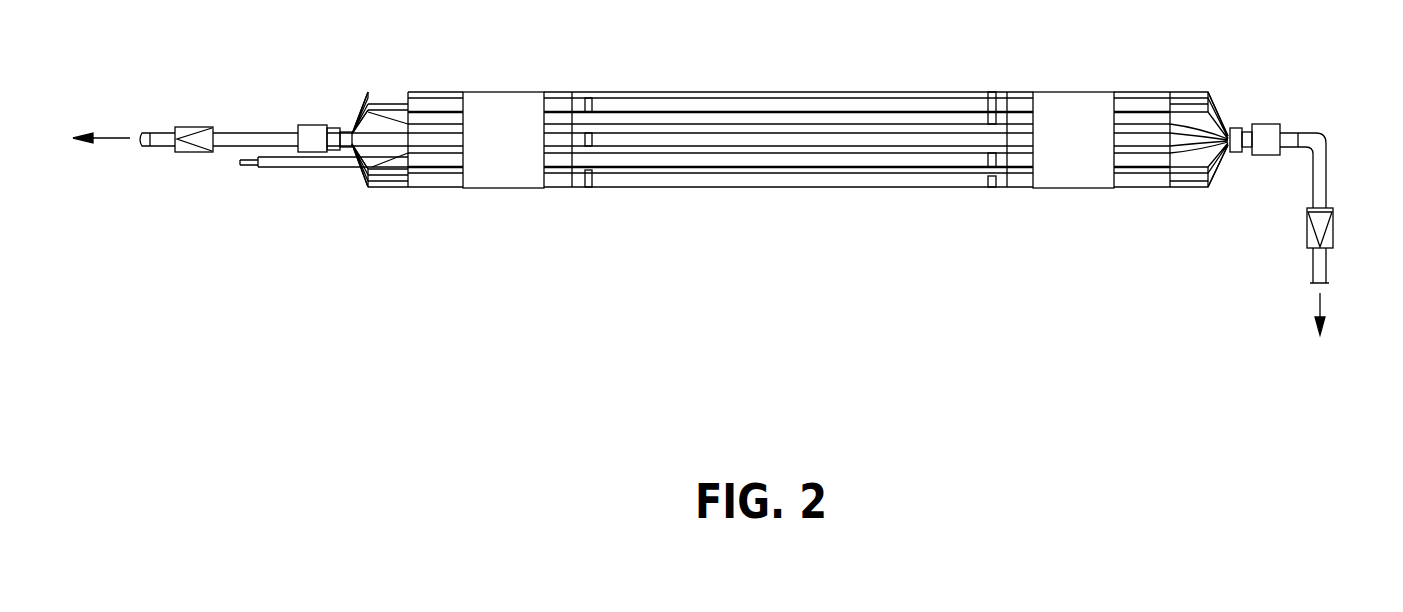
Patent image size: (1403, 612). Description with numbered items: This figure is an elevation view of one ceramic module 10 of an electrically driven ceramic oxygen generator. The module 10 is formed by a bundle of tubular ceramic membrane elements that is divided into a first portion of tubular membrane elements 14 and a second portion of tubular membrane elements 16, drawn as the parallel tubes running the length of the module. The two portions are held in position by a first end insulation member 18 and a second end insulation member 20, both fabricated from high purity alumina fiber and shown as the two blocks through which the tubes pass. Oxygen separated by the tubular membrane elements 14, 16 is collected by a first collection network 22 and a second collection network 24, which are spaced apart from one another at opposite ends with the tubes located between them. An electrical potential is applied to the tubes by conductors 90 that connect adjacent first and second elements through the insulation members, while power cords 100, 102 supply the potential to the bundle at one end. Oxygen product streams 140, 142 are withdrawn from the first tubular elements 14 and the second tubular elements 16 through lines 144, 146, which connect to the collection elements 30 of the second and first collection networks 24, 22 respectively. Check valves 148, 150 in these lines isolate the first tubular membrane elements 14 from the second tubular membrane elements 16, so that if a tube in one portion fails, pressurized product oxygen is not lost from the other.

The module 10 is at (808, 250).
The first tubular membrane elements 14 is at (725, 139).
The second tubular membrane elements 16 is at (625, 198).
The first end insulation member 18 is at (495, 117).
The second end insulation member 20 is at (1063, 114).
The first collection network 22 is at (355, 66).
The second collection network 24 is at (1218, 75).
The collection element 30 is at (1265, 125).
The conductor 90 is at (992, 185).
The power cord 100 is at (382, 145).
The power cord 102 is at (290, 181).
The oxygen product stream 140 is at (1318, 308).
The oxygen product stream 142 is at (110, 136).
The line 144 is at (1320, 182).
The line 146 is at (240, 132).
The check valve 148 is at (1306, 228).
The check valve 150 is at (192, 153).